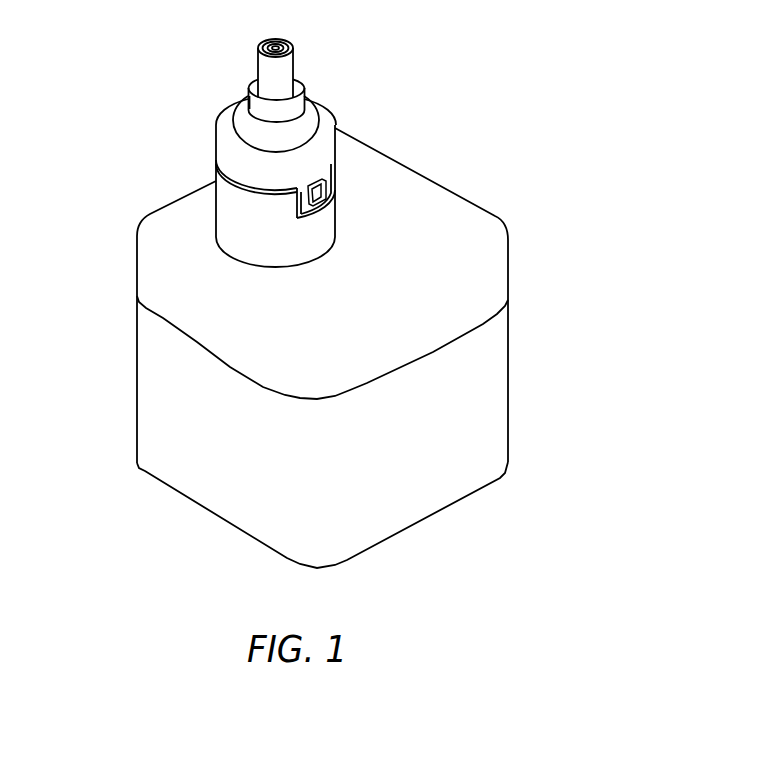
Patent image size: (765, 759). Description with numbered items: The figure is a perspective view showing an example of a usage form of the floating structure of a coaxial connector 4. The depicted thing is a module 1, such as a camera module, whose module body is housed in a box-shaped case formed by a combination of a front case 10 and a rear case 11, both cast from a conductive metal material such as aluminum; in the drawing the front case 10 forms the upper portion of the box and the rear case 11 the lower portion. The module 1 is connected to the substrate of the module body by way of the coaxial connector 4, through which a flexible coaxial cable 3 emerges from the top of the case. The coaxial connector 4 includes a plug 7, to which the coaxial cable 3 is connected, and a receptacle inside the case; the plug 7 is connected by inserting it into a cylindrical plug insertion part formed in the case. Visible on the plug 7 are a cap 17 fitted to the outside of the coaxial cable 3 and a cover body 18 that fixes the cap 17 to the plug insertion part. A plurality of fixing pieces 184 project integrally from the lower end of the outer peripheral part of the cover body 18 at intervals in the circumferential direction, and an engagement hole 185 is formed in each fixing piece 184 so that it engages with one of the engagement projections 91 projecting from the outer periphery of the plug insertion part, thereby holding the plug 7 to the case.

The module 1 is at (372, 290).
The flexible coaxial cable 3 is at (273, 77).
The coaxial connector 4 is at (428, 348).
The plug 7 is at (308, 104).
The front case 10 is at (485, 268).
The rear case 11 is at (492, 368).
The cap 17 is at (257, 108).
The cover body 18 is at (260, 199).
The engagement projection 91 is at (322, 190).
The fixing piece 184 is at (297, 195).
The engagement hole 185 is at (337, 174).